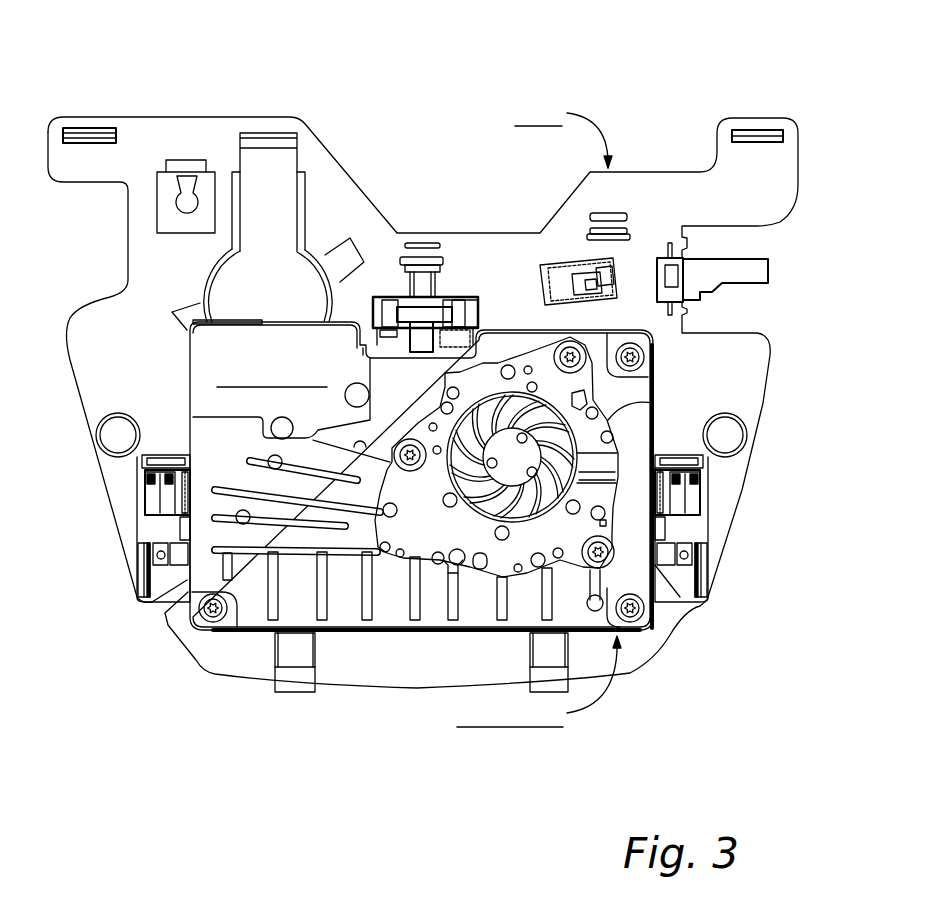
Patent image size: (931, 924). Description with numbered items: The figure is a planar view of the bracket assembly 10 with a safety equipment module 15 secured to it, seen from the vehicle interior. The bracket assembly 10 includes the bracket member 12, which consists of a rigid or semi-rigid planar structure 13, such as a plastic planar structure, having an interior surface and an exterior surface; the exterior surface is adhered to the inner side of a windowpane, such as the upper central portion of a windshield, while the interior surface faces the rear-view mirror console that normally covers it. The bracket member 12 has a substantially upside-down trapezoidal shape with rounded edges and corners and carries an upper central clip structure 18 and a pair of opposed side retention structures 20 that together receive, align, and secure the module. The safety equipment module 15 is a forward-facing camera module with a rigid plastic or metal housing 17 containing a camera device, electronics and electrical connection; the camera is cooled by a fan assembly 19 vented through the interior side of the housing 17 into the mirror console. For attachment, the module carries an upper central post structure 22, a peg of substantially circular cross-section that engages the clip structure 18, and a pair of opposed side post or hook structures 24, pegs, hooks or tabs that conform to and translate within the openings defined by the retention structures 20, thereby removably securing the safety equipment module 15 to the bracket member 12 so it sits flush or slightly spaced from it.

The bracket assembly 10 is at (630, 103).
The bracket member 12 is at (783, 315).
The planar structure 13 is at (423, 359).
The safety equipment module 15 is at (436, 676).
The housing 17 is at (417, 663).
The clip structure 18 is at (457, 273).
The fan assembly 19 is at (620, 412).
The retention structures 20 is at (713, 523).
The central post structure 22 is at (423, 300).
The side post or hook structures 24 is at (683, 493).